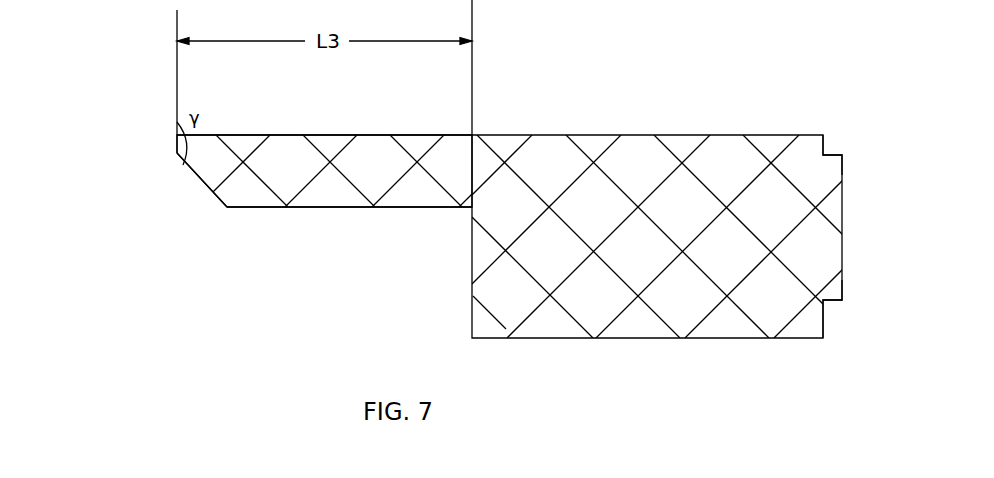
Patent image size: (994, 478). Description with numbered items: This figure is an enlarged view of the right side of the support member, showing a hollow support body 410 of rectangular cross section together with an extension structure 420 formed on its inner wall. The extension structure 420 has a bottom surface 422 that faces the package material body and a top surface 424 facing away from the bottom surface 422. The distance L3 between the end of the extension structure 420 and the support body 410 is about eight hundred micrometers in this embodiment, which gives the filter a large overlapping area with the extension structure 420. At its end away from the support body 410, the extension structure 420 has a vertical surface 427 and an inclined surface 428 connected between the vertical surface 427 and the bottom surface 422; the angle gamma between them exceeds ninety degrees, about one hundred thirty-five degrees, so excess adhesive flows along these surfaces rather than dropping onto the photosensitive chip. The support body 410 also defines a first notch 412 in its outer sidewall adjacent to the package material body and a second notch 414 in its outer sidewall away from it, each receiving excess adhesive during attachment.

The support body 410 is at (745, 220).
The first notch 412 is at (835, 322).
The second notch 414 is at (832, 148).
The extension structure 420 is at (280, 163).
The bottom surface 422 is at (316, 207).
The top surface 424 is at (383, 137).
The vertical surface 427 is at (176, 151).
The inclined surface 428 is at (200, 191).